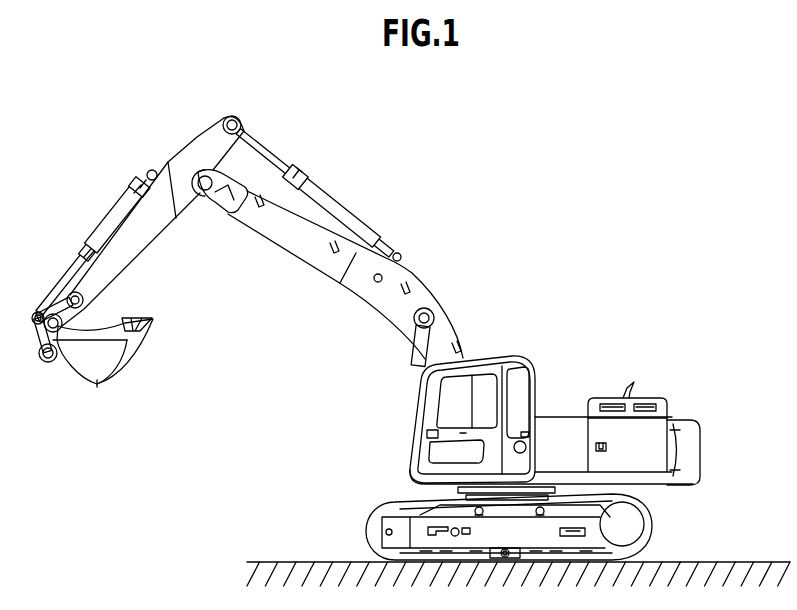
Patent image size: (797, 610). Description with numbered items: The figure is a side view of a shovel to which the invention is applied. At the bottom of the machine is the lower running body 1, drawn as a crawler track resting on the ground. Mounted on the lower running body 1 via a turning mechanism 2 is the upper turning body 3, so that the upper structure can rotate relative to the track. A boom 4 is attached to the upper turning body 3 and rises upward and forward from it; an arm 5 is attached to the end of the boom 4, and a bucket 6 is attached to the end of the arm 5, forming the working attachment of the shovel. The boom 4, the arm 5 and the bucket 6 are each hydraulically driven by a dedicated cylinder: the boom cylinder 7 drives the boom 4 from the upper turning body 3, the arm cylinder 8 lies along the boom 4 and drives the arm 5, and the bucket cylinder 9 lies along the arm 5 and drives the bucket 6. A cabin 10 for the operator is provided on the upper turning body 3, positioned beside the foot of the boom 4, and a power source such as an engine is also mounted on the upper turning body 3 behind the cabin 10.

The lower running body 1 is at (367, 533).
The turning mechanism 2 is at (598, 490).
The upper turning body 3 is at (563, 417).
The boom 4 is at (362, 288).
The arm 5 is at (156, 232).
The bucket 6 is at (97, 387).
The boom cylinder 7 is at (412, 357).
The arm cylinder 8 is at (353, 218).
The bucket cylinder 9 is at (115, 218).
The cabin 10 is at (517, 357).